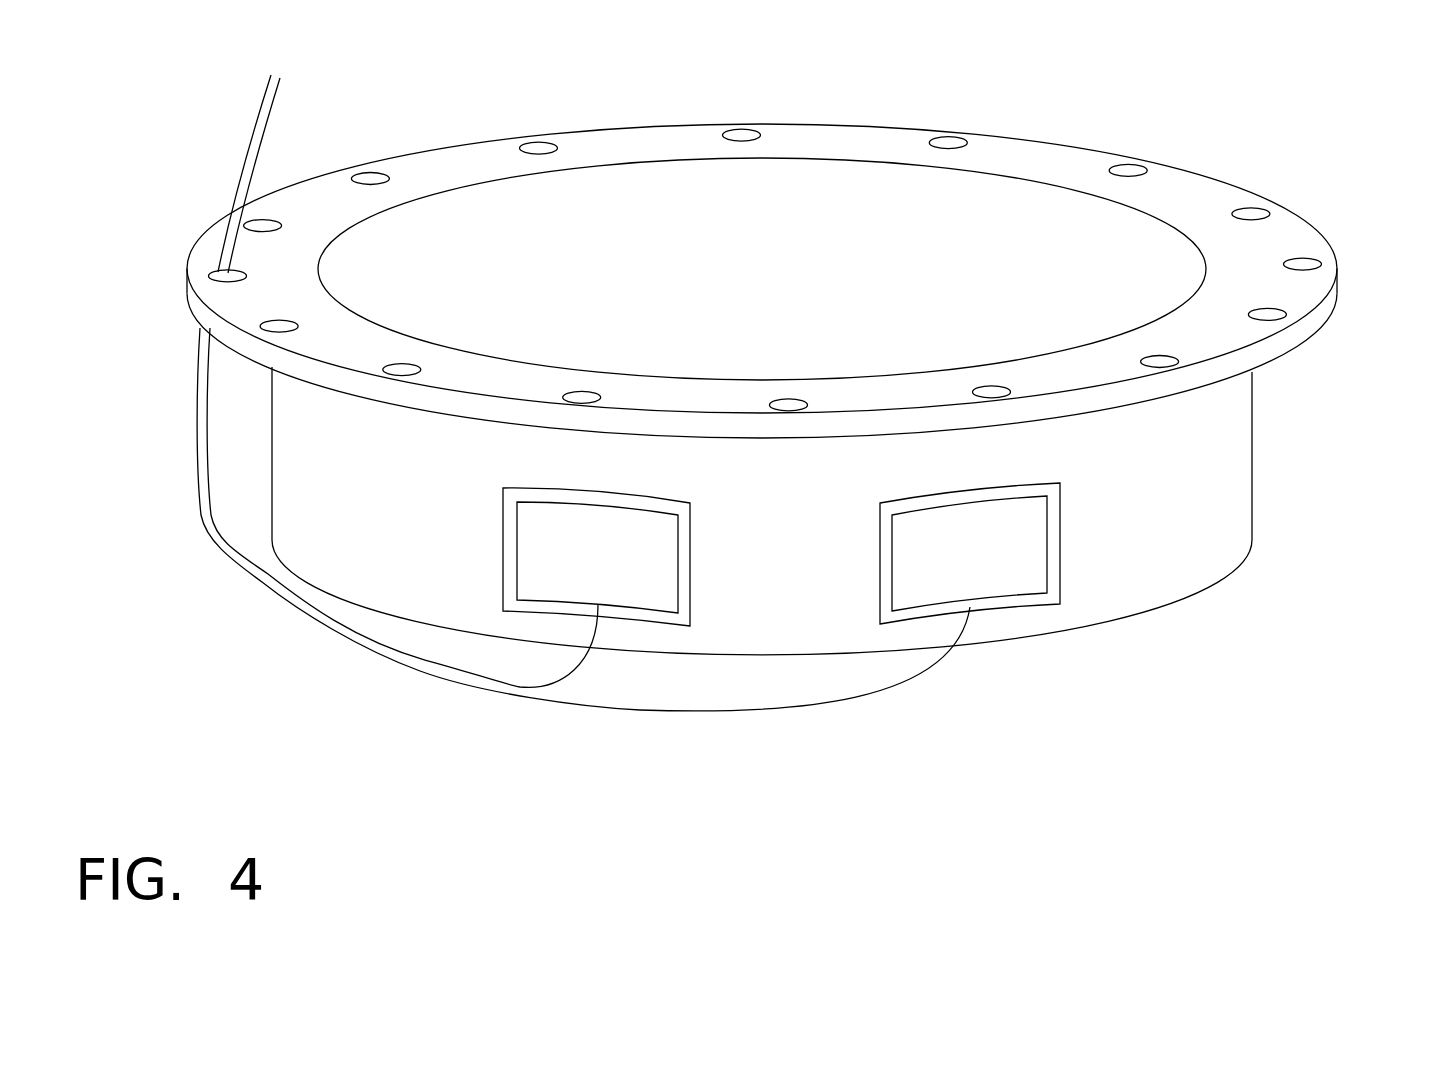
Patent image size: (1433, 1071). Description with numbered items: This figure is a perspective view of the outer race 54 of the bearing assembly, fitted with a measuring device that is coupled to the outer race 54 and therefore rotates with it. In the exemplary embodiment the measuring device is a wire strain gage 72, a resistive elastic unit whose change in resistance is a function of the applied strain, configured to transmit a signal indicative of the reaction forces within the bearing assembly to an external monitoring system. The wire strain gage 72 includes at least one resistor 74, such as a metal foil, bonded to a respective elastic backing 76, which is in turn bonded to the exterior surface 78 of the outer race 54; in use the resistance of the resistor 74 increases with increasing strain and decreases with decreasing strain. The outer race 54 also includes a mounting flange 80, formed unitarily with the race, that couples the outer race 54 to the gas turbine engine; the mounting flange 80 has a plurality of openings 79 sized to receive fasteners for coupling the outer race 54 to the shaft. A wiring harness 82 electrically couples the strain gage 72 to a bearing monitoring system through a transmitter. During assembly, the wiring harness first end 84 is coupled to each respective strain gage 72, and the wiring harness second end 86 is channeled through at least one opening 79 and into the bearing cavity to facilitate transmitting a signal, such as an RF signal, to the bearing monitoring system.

The outer race 54 is at (1319, 106).
The wire strain gage 72 is at (1072, 709).
The resistor 74 is at (609, 566).
The elastic backing 76 is at (676, 510).
The exterior surface 78 is at (1163, 572).
The openings 79 is at (946, 135).
The mounting flange 80 is at (1087, 158).
The wiring harness 82 is at (431, 718).
The wiring harness first end 84 is at (548, 662).
The wiring harness second end 86 is at (268, 113).